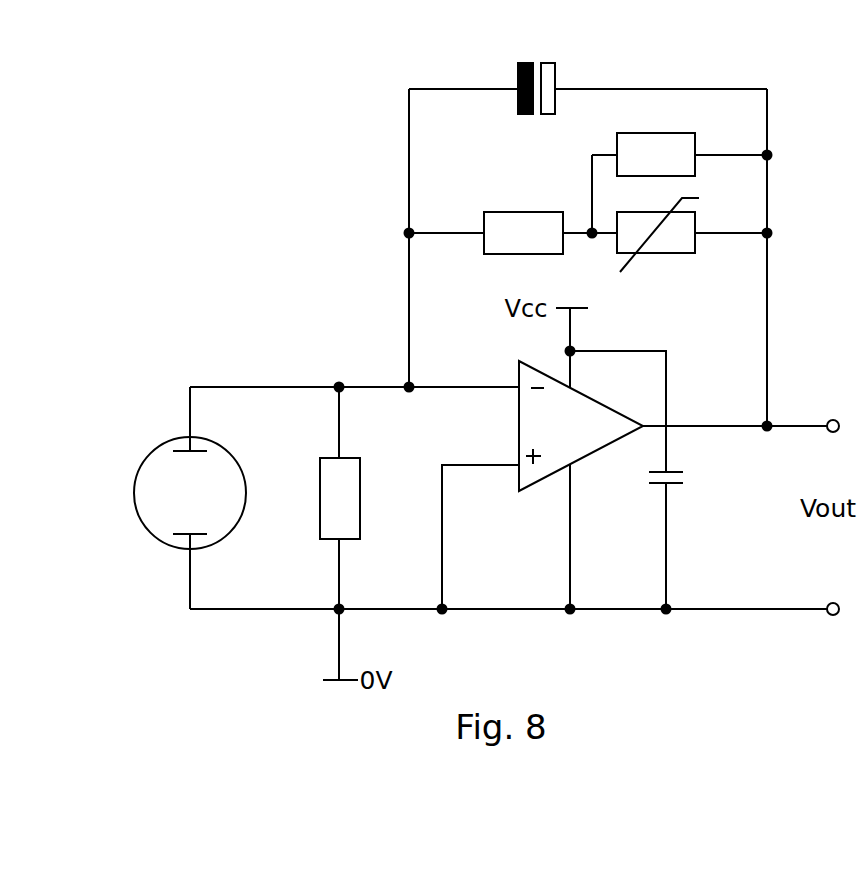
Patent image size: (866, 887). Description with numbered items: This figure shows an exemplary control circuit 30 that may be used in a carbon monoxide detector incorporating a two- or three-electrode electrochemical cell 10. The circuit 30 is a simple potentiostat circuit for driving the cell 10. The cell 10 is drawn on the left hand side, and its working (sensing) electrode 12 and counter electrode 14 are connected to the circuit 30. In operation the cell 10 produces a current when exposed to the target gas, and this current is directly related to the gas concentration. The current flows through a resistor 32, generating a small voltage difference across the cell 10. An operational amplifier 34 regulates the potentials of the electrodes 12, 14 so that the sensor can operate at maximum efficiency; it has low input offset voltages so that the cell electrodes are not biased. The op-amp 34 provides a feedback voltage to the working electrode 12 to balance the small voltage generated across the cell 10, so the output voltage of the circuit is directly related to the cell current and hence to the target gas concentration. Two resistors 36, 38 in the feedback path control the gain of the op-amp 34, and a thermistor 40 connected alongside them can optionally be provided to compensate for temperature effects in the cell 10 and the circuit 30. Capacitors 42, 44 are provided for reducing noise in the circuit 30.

The electrochemical cell 10 is at (112, 508).
The working electrode 12 is at (176, 463).
The counter electrode 14 is at (178, 518).
The control circuit 30 is at (282, 211).
The resistor 32 is at (320, 515).
The operational amplifier 34 is at (543, 480).
The resistor 36 is at (483, 220).
The resistor 38 is at (680, 133).
The thermistor 40 is at (697, 245).
The capacitor 42 is at (672, 471).
The capacitor 44 is at (517, 75).